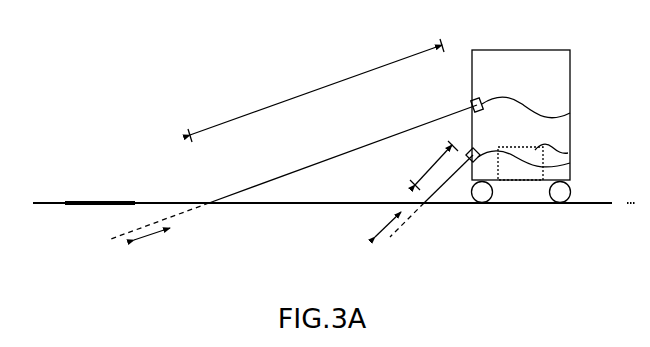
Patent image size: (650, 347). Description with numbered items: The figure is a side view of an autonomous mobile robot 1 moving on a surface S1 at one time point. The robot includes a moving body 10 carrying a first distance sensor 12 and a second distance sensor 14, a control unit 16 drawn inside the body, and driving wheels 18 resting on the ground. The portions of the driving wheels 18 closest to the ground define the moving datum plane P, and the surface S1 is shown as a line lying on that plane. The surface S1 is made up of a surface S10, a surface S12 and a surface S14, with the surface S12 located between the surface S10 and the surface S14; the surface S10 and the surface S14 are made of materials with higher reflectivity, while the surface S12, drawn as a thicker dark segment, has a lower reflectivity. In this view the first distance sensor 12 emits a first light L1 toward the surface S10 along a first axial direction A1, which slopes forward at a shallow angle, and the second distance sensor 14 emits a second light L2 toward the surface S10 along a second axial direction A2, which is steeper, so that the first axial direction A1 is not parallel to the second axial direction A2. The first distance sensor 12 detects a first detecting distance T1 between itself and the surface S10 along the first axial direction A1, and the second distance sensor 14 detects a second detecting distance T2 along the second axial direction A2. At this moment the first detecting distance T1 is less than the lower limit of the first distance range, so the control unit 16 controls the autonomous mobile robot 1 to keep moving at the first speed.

The autonomous mobile robot 1 is at (575, 35).
The moving body 10 is at (566, 58).
The first distance sensor 12 is at (569, 117).
The second distance sensor 14 is at (568, 166).
The control unit 16 is at (566, 153).
The driving wheels 18 is at (561, 205).
The surface S1 is at (69, 13).
The surface S10 is at (590, 220).
The surface S12 is at (107, 202).
The surface S14 is at (45, 220).
The moving datum plane P is at (620, 205).
The first light L1 is at (333, 157).
The second light L2 is at (456, 172).
The first detecting distance T1 is at (316, 90).
The second detecting distance T2 is at (434, 165).
The first axial direction A1 is at (152, 243).
The second axial direction A2 is at (380, 224).